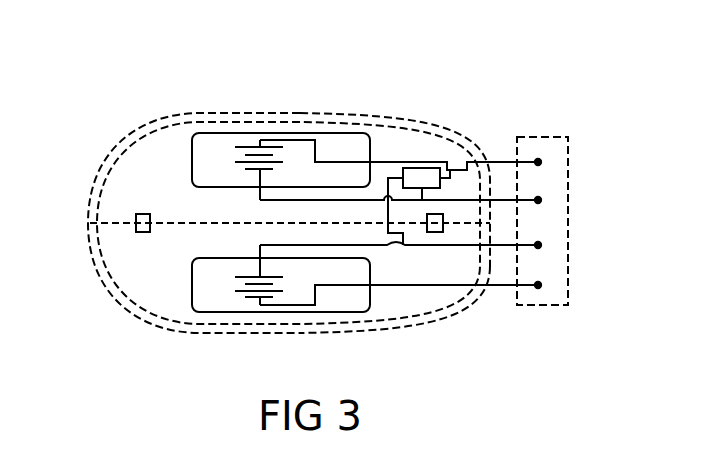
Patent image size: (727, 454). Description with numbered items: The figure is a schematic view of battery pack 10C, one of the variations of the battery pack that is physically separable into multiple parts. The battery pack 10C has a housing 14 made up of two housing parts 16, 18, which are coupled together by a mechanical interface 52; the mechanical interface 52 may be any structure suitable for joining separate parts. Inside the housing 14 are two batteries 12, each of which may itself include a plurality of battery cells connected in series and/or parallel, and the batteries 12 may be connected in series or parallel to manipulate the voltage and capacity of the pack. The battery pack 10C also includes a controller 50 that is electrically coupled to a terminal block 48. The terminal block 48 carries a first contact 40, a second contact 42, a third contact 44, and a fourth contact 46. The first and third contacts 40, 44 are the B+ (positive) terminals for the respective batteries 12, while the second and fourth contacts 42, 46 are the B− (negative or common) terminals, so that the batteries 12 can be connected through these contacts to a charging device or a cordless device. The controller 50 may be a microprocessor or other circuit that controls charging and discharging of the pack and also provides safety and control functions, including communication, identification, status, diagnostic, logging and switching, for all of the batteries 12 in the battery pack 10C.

The battery pack 10C is at (140, 100).
The battery 12 is at (212, 142).
The housing 14 is at (445, 121).
The housing part 16 is at (323, 116).
The housing part 18 is at (378, 329).
The first contact 40 is at (538, 162).
The second contact 42 is at (538, 200).
The third contact 44 is at (538, 245).
The fourth contact 46 is at (538, 285).
The terminal block 48 is at (530, 137).
The controller 50 is at (420, 178).
The mechanical interface 52 is at (140, 216).